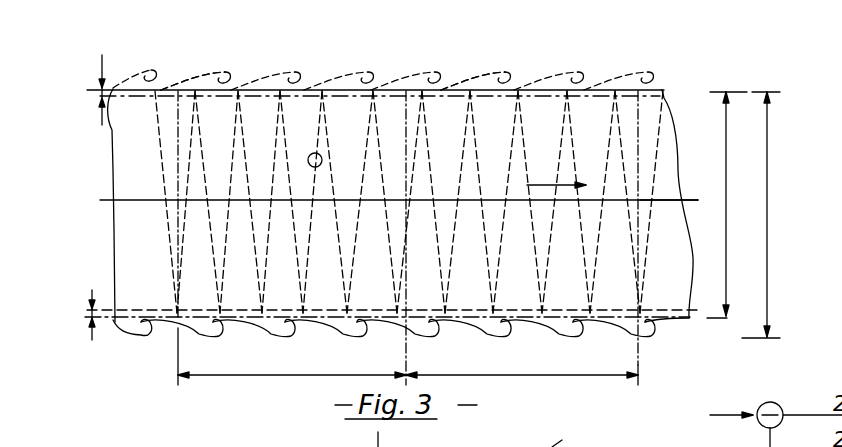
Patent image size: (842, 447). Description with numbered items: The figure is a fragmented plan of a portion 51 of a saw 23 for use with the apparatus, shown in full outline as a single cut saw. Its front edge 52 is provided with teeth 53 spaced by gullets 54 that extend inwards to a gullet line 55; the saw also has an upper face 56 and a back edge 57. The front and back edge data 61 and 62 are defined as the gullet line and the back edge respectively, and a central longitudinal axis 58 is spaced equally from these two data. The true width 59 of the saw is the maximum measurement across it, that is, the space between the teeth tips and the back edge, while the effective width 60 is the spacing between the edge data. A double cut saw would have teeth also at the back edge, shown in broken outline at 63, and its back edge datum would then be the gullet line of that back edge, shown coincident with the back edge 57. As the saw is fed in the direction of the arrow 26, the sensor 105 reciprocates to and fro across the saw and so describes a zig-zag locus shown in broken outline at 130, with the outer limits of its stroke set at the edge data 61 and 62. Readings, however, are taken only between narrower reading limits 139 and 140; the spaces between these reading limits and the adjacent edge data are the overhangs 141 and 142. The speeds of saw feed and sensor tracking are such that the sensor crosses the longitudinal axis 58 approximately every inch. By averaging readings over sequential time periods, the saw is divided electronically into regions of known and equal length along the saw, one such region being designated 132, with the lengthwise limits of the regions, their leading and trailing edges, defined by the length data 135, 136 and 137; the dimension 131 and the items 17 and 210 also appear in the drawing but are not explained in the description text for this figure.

The control system component 17 is at (572, 437).
The saw 23 is at (613, 140).
The arrow 26 is at (553, 174).
The portion of the saw 51 is at (613, 64).
The front edge 52 is at (473, 333).
The teeth 53 is at (290, 335).
The gullets 54 is at (303, 323).
The gullet line 55 is at (612, 330).
The upper face 56 is at (366, 268).
The back edge 57 is at (437, 90).
The central longitudinal axis 58 is at (462, 205).
The true width 59 is at (768, 186).
The effective width 60 is at (722, 182).
The front edge datum 61 is at (667, 342).
The back edge datum 62 is at (481, 69).
The back edge teeth 63 is at (318, 64).
The sensor 105 is at (323, 161).
The zig-zag locus 130 is at (168, 236).
The first length 131 is at (298, 378).
The region 132 is at (524, 378).
The length datum 135 is at (173, 259).
The length datum 136 is at (395, 241).
The length datum 137 is at (658, 213).
The reading limit 139 is at (500, 309).
The reading limit 140 is at (247, 95).
The overhang 141 is at (112, 58).
The overhang 142 is at (92, 335).
The input signal 210 is at (738, 417).